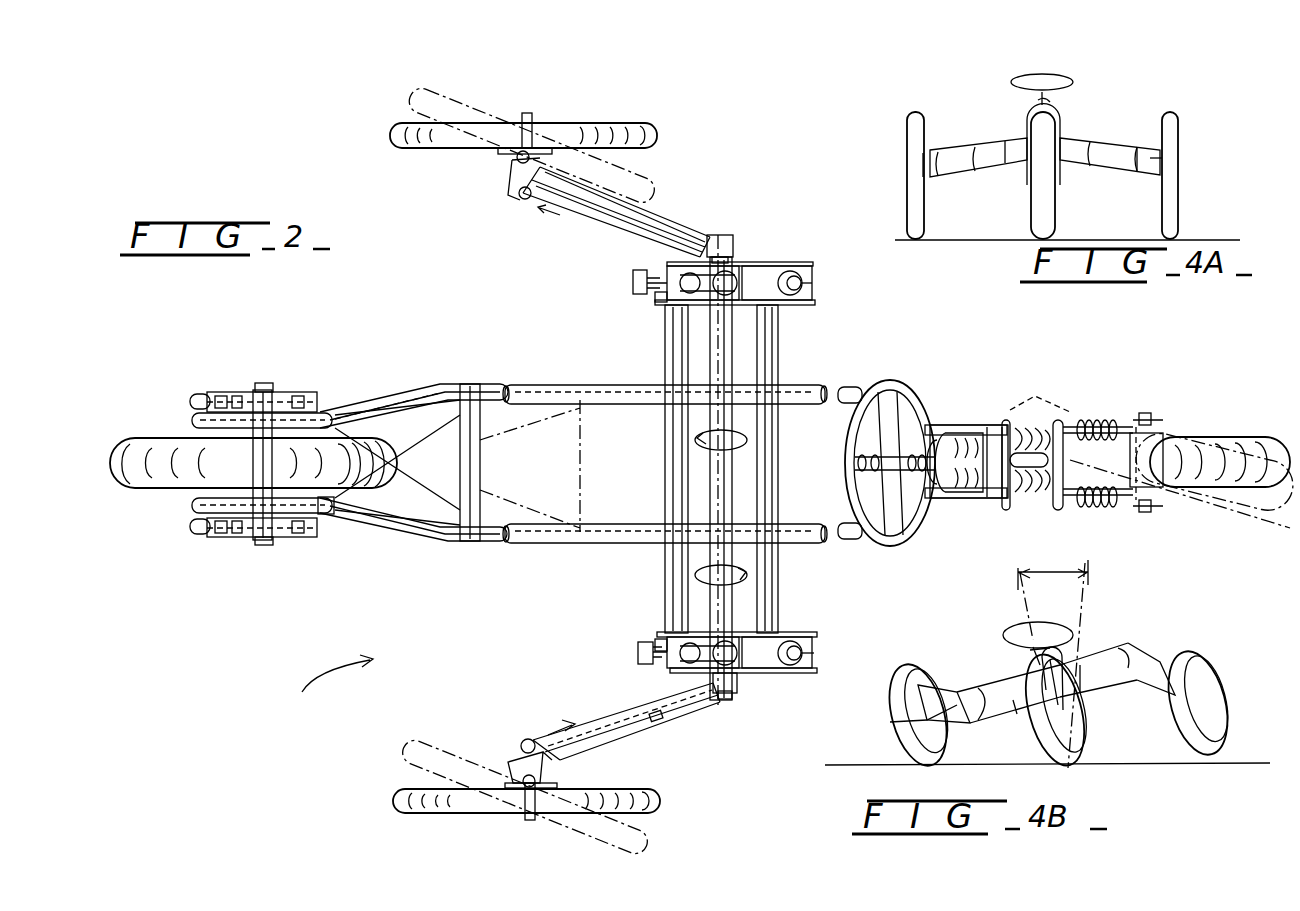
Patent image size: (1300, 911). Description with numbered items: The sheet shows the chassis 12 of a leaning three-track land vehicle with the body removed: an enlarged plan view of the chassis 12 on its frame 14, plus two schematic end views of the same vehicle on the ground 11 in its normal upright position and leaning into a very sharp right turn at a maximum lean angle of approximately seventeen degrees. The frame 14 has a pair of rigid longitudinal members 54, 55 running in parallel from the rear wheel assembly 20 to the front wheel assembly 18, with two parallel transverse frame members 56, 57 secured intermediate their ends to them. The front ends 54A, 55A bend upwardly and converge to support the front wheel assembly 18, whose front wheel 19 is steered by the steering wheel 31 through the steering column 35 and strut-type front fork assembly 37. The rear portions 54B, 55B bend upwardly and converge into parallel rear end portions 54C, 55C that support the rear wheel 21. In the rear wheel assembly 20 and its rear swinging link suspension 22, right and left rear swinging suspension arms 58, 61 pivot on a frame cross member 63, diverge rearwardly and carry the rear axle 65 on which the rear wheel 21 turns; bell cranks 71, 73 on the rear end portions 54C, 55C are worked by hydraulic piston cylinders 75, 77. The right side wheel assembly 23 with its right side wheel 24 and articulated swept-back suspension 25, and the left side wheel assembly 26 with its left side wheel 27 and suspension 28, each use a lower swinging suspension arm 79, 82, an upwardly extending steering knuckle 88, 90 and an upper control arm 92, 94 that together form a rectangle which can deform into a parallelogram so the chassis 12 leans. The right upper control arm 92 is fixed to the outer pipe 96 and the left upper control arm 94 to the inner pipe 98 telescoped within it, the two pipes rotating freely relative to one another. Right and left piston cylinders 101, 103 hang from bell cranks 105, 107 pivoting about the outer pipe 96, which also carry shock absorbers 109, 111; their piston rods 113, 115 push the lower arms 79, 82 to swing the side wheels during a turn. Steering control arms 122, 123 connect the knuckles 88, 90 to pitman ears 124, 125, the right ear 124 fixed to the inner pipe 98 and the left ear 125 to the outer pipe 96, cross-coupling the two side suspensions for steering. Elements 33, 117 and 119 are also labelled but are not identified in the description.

In FIG. 4A, the ground 11 is at (1100, 240).
In FIG. 4B, the ground 11 is at (878, 765).
In FIG. 2, the chassis 12 is at (312, 677).
In FIG. 4A, the chassis 12 is at (870, 152).
In FIG. 2, the frame 14 is at (488, 570).
In FIG. 2, the front wheel assembly 18 is at (984, 373).
In FIG. 2, the front wheel 19 is at (1185, 452).
In FIG. 4A, the front wheel 19 is at (1046, 216).
In FIG. 4B, the front wheel 19 is at (1055, 742).
In FIG. 2, the rear wheel assembly 20 is at (186, 382).
In FIG. 2, the rear wheel 21 is at (170, 490).
In FIG. 2, the rear swinging link suspension 22 is at (288, 552).
In FIG. 2, the right side wheel assembly 23 is at (356, 741).
In FIG. 4A, the right side wheel assembly 23 is at (925, 122).
In FIG. 4B, the right side wheel assembly 23 is at (898, 690).
In FIG. 2, the right side wheel 24 is at (395, 797).
In FIG. 2, the right side articulated swinging-link swept-back suspension 25 is at (644, 732).
In FIG. 2, the left side wheel assembly 26 is at (420, 172).
In FIG. 2, the left side wheel 27 is at (660, 134).
In FIG. 4A, the left side wheel 27 is at (1162, 124).
In FIG. 4B, the left side wheel 27 is at (1200, 672).
In FIG. 2, the left side articulated swinging-link swept-back suspension 28 is at (670, 220).
In FIG. 2, the steering wheel 31 is at (888, 380).
In FIG. 4A, the steering wheel 31 is at (1073, 80).
In FIG. 4B, the steering wheel 31 is at (1013, 630).
In FIG. 2, the steering hub 33 is at (980, 498).
In FIG. 2, the steering column 35 is at (1038, 408).
In FIG. 4A, the steering column 35 is at (1048, 100).
In FIG. 4B, the steering column 35 is at (1030, 650).
In FIG. 2, the strut-type front fork assembly 37 is at (1090, 524).
In FIG. 4A, the strut-type front fork assembly 37 is at (1058, 122).
In FIG. 4B, the strut-type front fork assembly 37 is at (960, 672).
In FIG. 2, the longitudinal frame member 54 is at (597, 557).
In FIG. 2, the front end portion of longitudinal member 54A is at (938, 505).
In FIG. 2, the rear bent portion of longitudinal member 54B is at (383, 530).
In FIG. 2, the rear end portion of longitudinal member 54C is at (190, 505).
In FIG. 2, the longitudinal frame member 55 is at (611, 378).
In FIG. 2, the front end portion of longitudinal member 55A is at (935, 425).
In FIG. 2, the rear bent portion of longitudinal member 55B is at (366, 397).
In FIG. 2, the rear end portion of longitudinal member 55C is at (196, 421).
In FIG. 2, the transverse frame member 56 is at (668, 592).
In FIG. 2, the transverse frame member 57 is at (780, 572).
In FIG. 4B, the transverse frame member 57 is at (1105, 690).
In FIG. 2, the right rear swinging suspension arm 58 is at (328, 515).
In FIG. 2, the left rear swinging suspension arm 61 is at (425, 402).
In FIG. 2, the frame cross member 63 is at (480, 465).
In FIG. 2, the rear axle 65 is at (272, 430).
In FIG. 2, the bell crank 71 is at (245, 534).
In FIG. 2, the bell crank 73 is at (258, 386).
In FIG. 2, the hydraulic piston cylinder 75 is at (198, 530).
In FIG. 2, the hydraulic piston cylinder 77 is at (198, 398).
In FIG. 2, the right lower swinging suspension arm 79 is at (555, 762).
In FIG. 4A, the right lower swinging suspension arm 79 is at (1008, 172).
In FIG. 4B, the right lower swinging suspension arm 79 is at (910, 722).
In FIG. 2, the left lower swinging suspension arm 82 is at (612, 178).
In FIG. 4A, the left lower swinging suspension arm 82 is at (1136, 176).
In FIG. 4B, the left lower swinging suspension arm 82 is at (1152, 655).
In FIG. 2, the right steering knuckle 88 is at (525, 742).
In FIG. 4A, the right steering knuckle 88 is at (938, 177).
In FIG. 4B, the right steering knuckle 88 is at (975, 690).
In FIG. 2, the left steering knuckle 90 is at (520, 195).
In FIG. 4A, the left steering knuckle 90 is at (1160, 158).
In FIG. 4B, the left steering knuckle 90 is at (1120, 652).
In FIG. 2, the right upper control arm 92 is at (680, 705).
In FIG. 4A, the right upper control arm 92 is at (977, 168).
In FIG. 4B, the right upper control arm 92 is at (925, 690).
In FIG. 2, the left upper control arm 94 is at (595, 210).
In FIG. 4A, the left upper control arm 94 is at (1092, 168).
In FIG. 4B, the left upper control arm 94 is at (1138, 650).
In FIG. 2, the outer rigid tube or pipe 96 is at (740, 470).
In FIG. 4B, the outer rigid tube or pipe 96 is at (1010, 708).
In FIG. 2, the inner rigid tube or pipe 98 is at (710, 448).
In FIG. 2, the right piston cylinder 101 is at (697, 650).
In FIG. 2, the left piston cylinder 103 is at (725, 280).
In FIG. 2, the right bell crank 105 is at (765, 673).
In FIG. 2, the left bell crank 107 is at (778, 268).
In FIG. 2, the right shock absorber 109 is at (814, 653).
In FIG. 2, the left shock absorber 111 is at (812, 283).
In FIG. 2, the piston rod 113 is at (660, 642).
In FIG. 2, the piston rod 115 is at (660, 296).
In FIG. 2, the lower clamp bolt 117 is at (638, 653).
In FIG. 2, the upper clamp bolt 119 is at (633, 283).
In FIG. 2, the right steering control arm 122 is at (578, 720).
In FIG. 2, the left steering control arm 123 is at (560, 218).
In FIG. 2, the pitman arm or ear 124 is at (737, 695).
In FIG. 2, the pitman arm or ear 125 is at (735, 243).